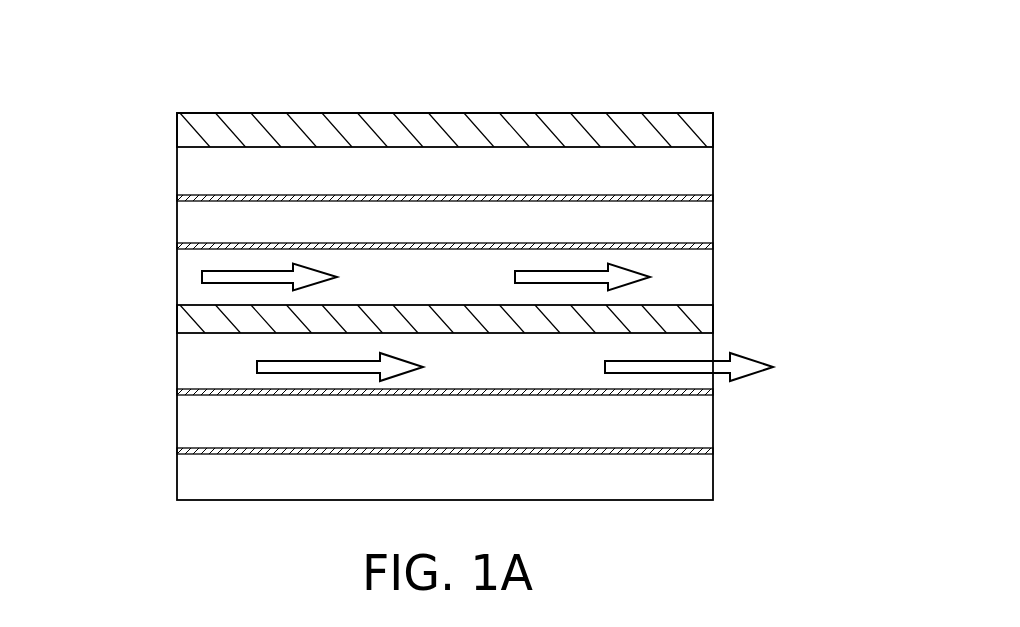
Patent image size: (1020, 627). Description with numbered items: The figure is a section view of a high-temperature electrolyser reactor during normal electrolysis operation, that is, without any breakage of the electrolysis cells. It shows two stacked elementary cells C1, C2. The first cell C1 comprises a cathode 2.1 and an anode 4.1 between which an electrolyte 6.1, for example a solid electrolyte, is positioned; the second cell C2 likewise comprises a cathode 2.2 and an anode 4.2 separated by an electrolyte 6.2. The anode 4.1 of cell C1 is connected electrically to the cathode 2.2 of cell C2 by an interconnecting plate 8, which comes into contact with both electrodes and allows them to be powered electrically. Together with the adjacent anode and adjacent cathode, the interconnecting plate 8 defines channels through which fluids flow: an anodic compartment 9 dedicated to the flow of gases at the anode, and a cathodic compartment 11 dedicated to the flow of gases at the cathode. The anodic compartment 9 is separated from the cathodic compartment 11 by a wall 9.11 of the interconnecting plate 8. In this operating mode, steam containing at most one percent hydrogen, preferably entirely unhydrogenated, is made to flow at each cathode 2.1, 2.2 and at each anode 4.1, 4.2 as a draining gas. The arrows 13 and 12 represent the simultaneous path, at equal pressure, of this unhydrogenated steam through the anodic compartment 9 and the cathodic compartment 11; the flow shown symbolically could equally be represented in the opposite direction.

The interconnecting plate 8 is at (722, 248).
The wall 9.11 is at (700, 130).
The elementary cell C1 is at (87, 155).
The elementary cell C2 is at (87, 352).
The cathode 2.1 is at (178, 196).
The electrolyte 6.1 is at (193, 225).
The anode 4.1 is at (178, 249).
The cathode 2.2 is at (178, 390).
The electrolyte 6.2 is at (193, 428).
The anode 4.2 is at (178, 455).
The anodic compartment 9 is at (441, 288).
The cathodic compartment 11 is at (521, 378).
The arrows 13 is at (243, 277).
The arrows 12 is at (328, 367).